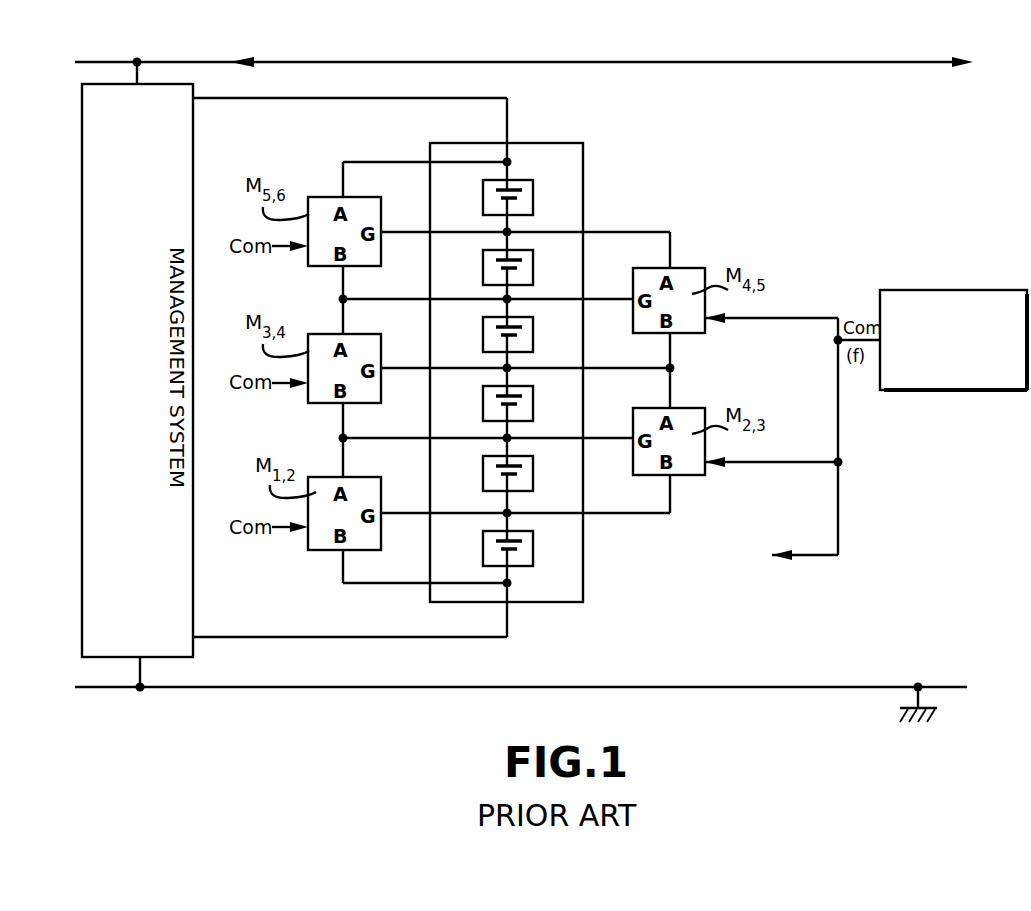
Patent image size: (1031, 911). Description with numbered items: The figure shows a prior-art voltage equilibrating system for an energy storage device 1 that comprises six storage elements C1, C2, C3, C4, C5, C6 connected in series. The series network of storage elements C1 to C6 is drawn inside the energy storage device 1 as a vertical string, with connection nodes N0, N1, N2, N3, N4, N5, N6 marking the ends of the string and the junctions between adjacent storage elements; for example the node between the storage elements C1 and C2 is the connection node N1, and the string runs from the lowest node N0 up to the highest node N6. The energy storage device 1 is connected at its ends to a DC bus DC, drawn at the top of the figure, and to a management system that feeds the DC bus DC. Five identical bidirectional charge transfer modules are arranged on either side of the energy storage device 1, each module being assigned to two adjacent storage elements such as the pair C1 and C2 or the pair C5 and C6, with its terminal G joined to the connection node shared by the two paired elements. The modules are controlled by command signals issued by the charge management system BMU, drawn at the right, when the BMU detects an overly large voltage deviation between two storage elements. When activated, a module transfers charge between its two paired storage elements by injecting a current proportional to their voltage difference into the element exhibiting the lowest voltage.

The energy storage device 1 is at (583, 143).
The DC bus DC is at (852, 62).
The storage element C1 is at (533, 549).
The storage element C2 is at (533, 474).
The storage element C3 is at (533, 404).
The storage element C4 is at (533, 335).
The storage element C5 is at (533, 268).
The storage element C6 is at (533, 198).
The node N0 is at (505, 582).
The node N1 is at (505, 516).
The node N2 is at (505, 441).
The node N3 is at (505, 371).
The node N4 is at (505, 302).
The node N5 is at (505, 235).
The node N6 is at (505, 165).
The charge management system BMU is at (953, 340).